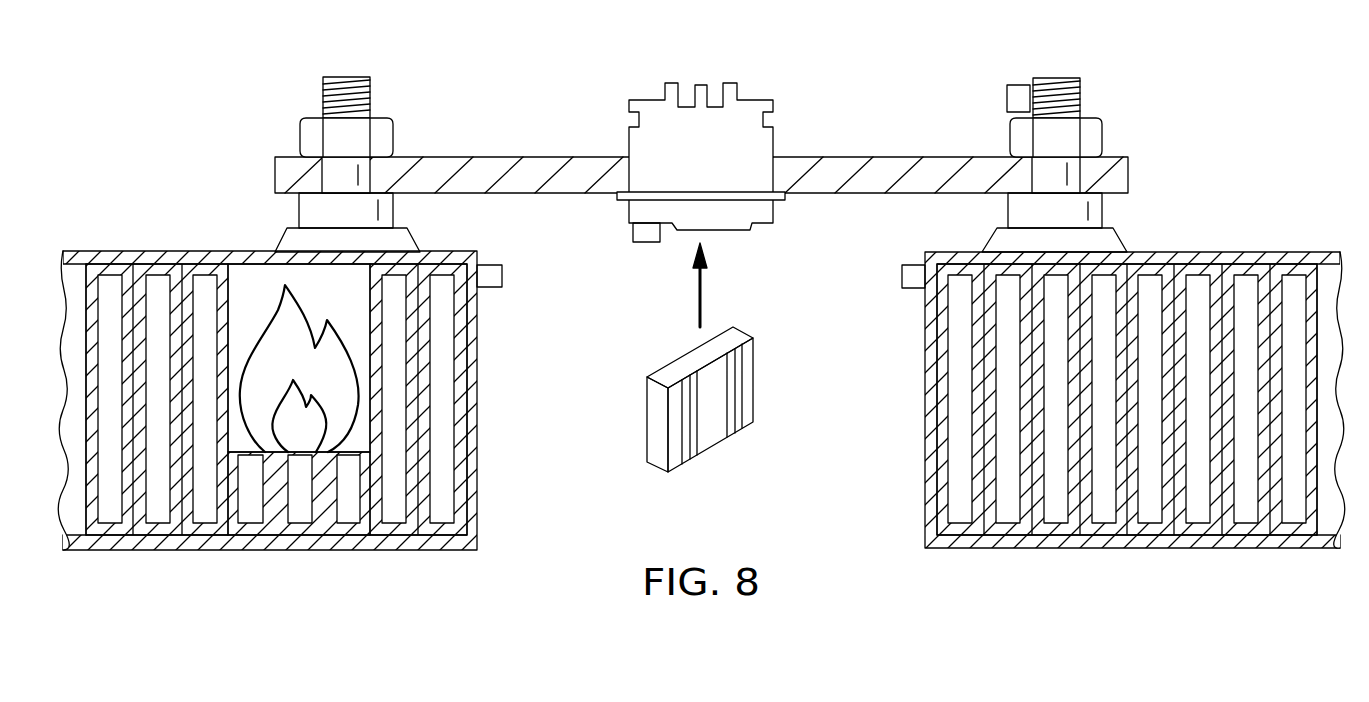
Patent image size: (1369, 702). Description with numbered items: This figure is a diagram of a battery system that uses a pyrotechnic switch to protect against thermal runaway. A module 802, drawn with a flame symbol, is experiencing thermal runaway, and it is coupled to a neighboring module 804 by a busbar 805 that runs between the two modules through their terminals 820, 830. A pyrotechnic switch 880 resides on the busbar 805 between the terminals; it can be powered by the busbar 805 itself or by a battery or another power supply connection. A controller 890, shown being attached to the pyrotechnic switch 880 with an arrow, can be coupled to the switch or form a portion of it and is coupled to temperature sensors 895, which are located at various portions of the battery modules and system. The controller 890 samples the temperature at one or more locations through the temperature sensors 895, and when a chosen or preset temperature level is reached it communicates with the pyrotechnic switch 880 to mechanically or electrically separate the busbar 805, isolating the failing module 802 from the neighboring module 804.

The module 802 is at (162, 212).
The neighboring module 804 is at (1238, 212).
The busbar 805 is at (470, 157).
The terminal 820 is at (345, 77).
The terminal 830 is at (1053, 78).
The pyrotechnic switch 880 is at (648, 100).
The controller 890 is at (757, 380).
The temperature sensors 895 is at (503, 275).